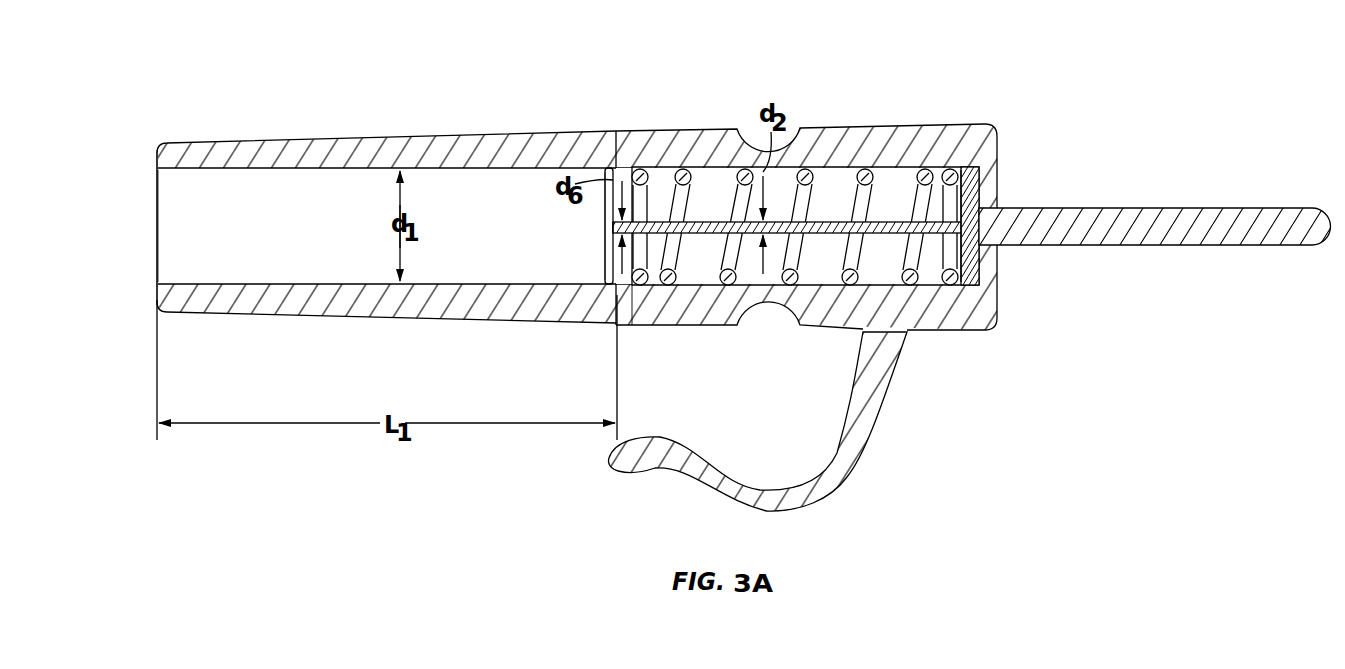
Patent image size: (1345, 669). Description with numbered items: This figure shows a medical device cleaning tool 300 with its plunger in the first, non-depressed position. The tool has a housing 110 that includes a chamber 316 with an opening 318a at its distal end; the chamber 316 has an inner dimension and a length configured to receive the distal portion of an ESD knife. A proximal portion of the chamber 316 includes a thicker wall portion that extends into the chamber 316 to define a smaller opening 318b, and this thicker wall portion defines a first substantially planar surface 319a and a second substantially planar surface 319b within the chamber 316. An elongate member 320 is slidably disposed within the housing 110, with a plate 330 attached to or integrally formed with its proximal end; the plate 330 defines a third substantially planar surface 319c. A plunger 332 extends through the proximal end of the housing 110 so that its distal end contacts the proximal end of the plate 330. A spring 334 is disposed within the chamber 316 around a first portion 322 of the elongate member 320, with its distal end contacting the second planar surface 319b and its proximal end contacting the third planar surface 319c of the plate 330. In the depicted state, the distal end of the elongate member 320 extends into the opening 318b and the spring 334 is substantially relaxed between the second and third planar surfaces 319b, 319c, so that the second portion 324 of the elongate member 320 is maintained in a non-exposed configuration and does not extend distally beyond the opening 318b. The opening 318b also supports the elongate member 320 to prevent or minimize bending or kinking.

The medical device cleaning tool 300 is at (245, 110).
The housing 110 is at (521, 147).
The chamber 316 is at (273, 186).
The opening 318a is at (144, 266).
The opening 318b is at (635, 216).
The first substantially planar surface 319a is at (613, 262).
The second substantially planar surface 319b is at (618, 258).
The third substantially planar surface 319c is at (962, 197).
The elongate member 320 is at (713, 221).
The first portion of the elongate member 322 is at (975, 330).
The second portion of the elongate member 324 is at (962, 123).
The plate 330 is at (980, 197).
The plunger 332 is at (1115, 218).
The spring 334 is at (862, 170).